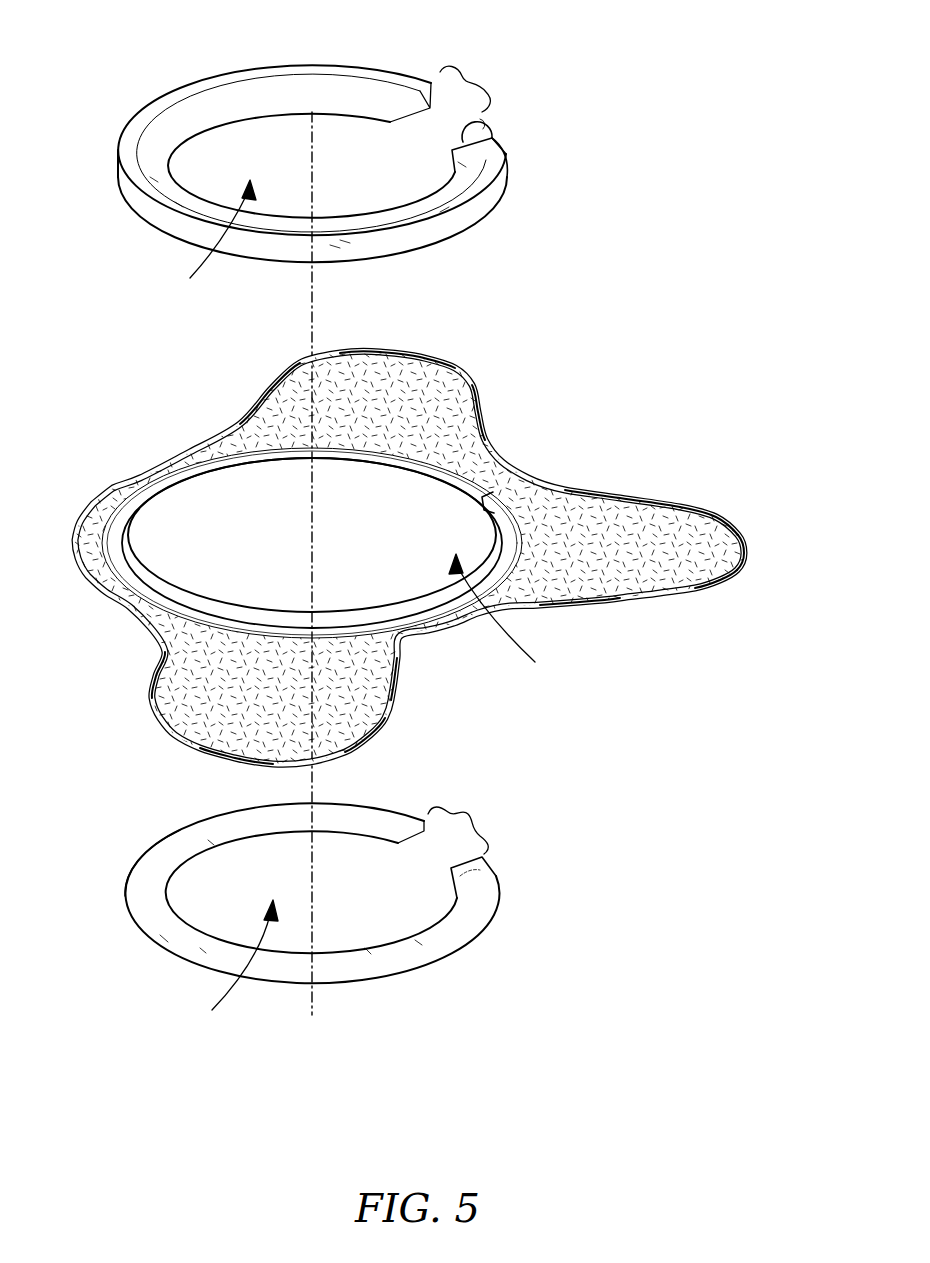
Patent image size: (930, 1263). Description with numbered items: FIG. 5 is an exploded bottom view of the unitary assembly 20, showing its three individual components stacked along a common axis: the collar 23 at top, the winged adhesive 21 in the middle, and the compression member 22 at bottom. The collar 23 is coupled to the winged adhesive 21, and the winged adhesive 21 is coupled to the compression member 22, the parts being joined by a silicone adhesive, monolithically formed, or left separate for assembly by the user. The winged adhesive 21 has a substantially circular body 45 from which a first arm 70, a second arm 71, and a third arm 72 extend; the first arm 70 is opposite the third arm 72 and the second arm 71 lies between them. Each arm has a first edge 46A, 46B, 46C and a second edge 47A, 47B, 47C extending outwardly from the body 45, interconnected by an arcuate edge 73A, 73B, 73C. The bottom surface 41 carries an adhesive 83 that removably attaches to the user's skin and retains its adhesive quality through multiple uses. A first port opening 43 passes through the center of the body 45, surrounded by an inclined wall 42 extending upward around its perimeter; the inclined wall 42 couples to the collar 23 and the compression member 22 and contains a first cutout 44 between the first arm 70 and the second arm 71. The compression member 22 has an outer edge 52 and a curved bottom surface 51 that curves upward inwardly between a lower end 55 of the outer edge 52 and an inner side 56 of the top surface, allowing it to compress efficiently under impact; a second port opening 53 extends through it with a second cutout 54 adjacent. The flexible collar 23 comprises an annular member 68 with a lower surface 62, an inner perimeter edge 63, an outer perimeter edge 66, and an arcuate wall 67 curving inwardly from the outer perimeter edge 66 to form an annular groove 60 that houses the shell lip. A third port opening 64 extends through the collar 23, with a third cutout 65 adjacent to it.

The unitary assembly 20 is at (114, 46).
The winged adhesive 21 is at (570, 500).
The compression member 22 is at (483, 917).
The collar 23 is at (130, 160).
The bottom surface 41 is at (628, 560).
The inclined wall 42 is at (170, 583).
The first port opening 43 is at (504, 618).
The first cutout 44 is at (487, 488).
The body 45 is at (115, 552).
The first edge 46A is at (163, 681).
The first edge 46B is at (600, 598).
The first edge 46C is at (480, 407).
The second edge 47A is at (393, 698).
The second edge 47B is at (640, 497).
The second edge 47C is at (268, 396).
The curved bottom surface 51 is at (466, 949).
The outer edge 52 is at (183, 833).
The second port opening 53 is at (230, 970).
The second cutout 54 is at (460, 824).
The lower end 55 is at (493, 872).
The inner side 56 is at (373, 950).
The annular groove 60 is at (482, 135).
The lower surface 62 is at (492, 195).
The inner perimeter edge 63 is at (430, 217).
The third port opening 64 is at (208, 239).
The third cutout 65 is at (469, 81).
The outer perimeter edge 66 is at (320, 68).
The arcuate wall 67 is at (490, 118).
The annular member 68 is at (160, 115).
The first arm 70 is at (367, 737).
The second arm 71 is at (698, 520).
The third arm 72 is at (347, 368).
The arcuate edge 73A is at (207, 758).
The arcuate edge 73B is at (745, 546).
The arcuate edge 73C is at (418, 360).
The adhesive 83 is at (688, 567).